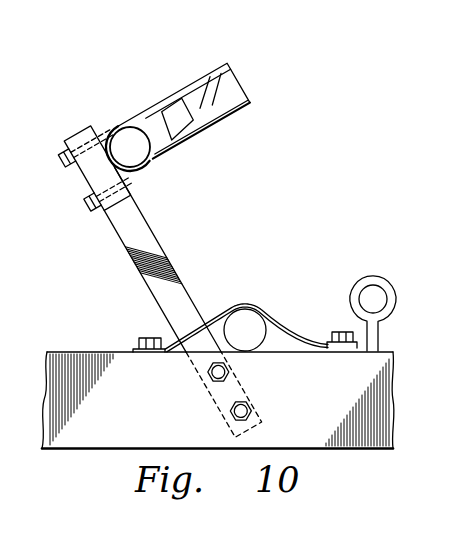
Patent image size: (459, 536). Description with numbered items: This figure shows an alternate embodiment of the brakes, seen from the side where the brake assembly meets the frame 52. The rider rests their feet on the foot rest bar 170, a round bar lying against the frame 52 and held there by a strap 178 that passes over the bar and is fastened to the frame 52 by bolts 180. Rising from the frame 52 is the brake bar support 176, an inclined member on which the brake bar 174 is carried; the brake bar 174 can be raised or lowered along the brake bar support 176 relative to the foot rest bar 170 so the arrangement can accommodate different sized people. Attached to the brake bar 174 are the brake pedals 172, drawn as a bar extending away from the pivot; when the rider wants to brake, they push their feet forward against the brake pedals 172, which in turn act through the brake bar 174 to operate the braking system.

The frame 52 is at (139, 422).
The foot rest bar 170 is at (267, 340).
The brake pedals 172 is at (197, 108).
The brake bar 174 is at (122, 138).
The brake bar support 176 is at (167, 252).
The strap 178 is at (277, 316).
The bolts 180 is at (137, 341).